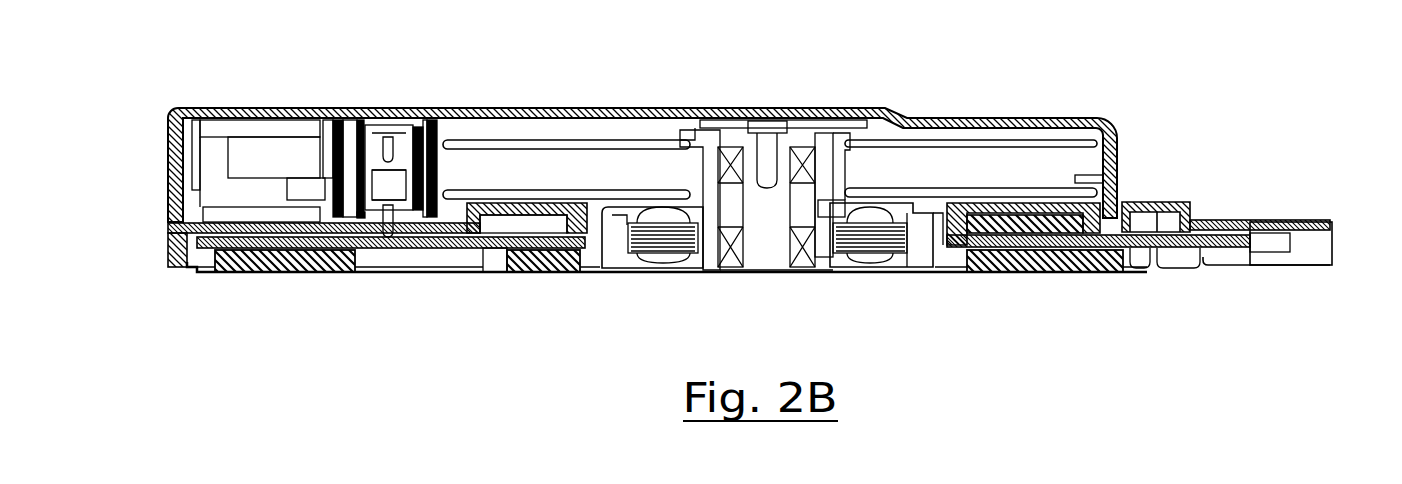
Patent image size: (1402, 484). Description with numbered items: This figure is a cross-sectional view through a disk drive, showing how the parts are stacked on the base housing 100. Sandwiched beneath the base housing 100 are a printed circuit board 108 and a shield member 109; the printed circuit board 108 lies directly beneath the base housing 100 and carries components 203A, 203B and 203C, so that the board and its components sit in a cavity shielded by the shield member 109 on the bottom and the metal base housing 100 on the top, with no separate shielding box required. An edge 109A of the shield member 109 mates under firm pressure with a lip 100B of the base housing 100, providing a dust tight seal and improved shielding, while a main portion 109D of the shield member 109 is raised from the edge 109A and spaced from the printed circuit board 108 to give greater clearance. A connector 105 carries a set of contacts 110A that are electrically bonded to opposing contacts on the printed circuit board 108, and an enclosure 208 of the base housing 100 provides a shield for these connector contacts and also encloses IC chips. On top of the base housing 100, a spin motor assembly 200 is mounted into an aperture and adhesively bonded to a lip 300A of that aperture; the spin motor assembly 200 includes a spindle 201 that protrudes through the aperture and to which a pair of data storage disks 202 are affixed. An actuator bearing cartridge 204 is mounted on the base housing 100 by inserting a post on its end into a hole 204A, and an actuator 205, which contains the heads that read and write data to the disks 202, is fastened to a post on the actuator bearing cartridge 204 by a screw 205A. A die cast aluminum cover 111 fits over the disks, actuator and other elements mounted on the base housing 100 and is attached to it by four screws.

The base housing 100 is at (537, 207).
The lip 100B is at (288, 253).
The connector 105 is at (1310, 250).
The printed circuit board 108 is at (493, 253).
The shield member 109 is at (878, 273).
The edge of shield member 109A is at (183, 268).
The main portion of shield member 109D is at (212, 273).
The contacts 110A is at (1157, 203).
The cover 111 is at (988, 116).
The spin motor assembly 200 is at (771, 305).
The spindle 201 is at (820, 128).
The data storage disks 202 is at (552, 145).
The component 203A is at (300, 275).
The component 203B is at (547, 272).
The component 203C is at (1053, 270).
The actuator bearing cartridge 204 is at (400, 185).
The hole 204A is at (395, 250).
The actuator 205 is at (345, 140).
The screw 205A is at (392, 188).
The enclosure 208 is at (1190, 212).
The lip of aperture 300A is at (942, 195).